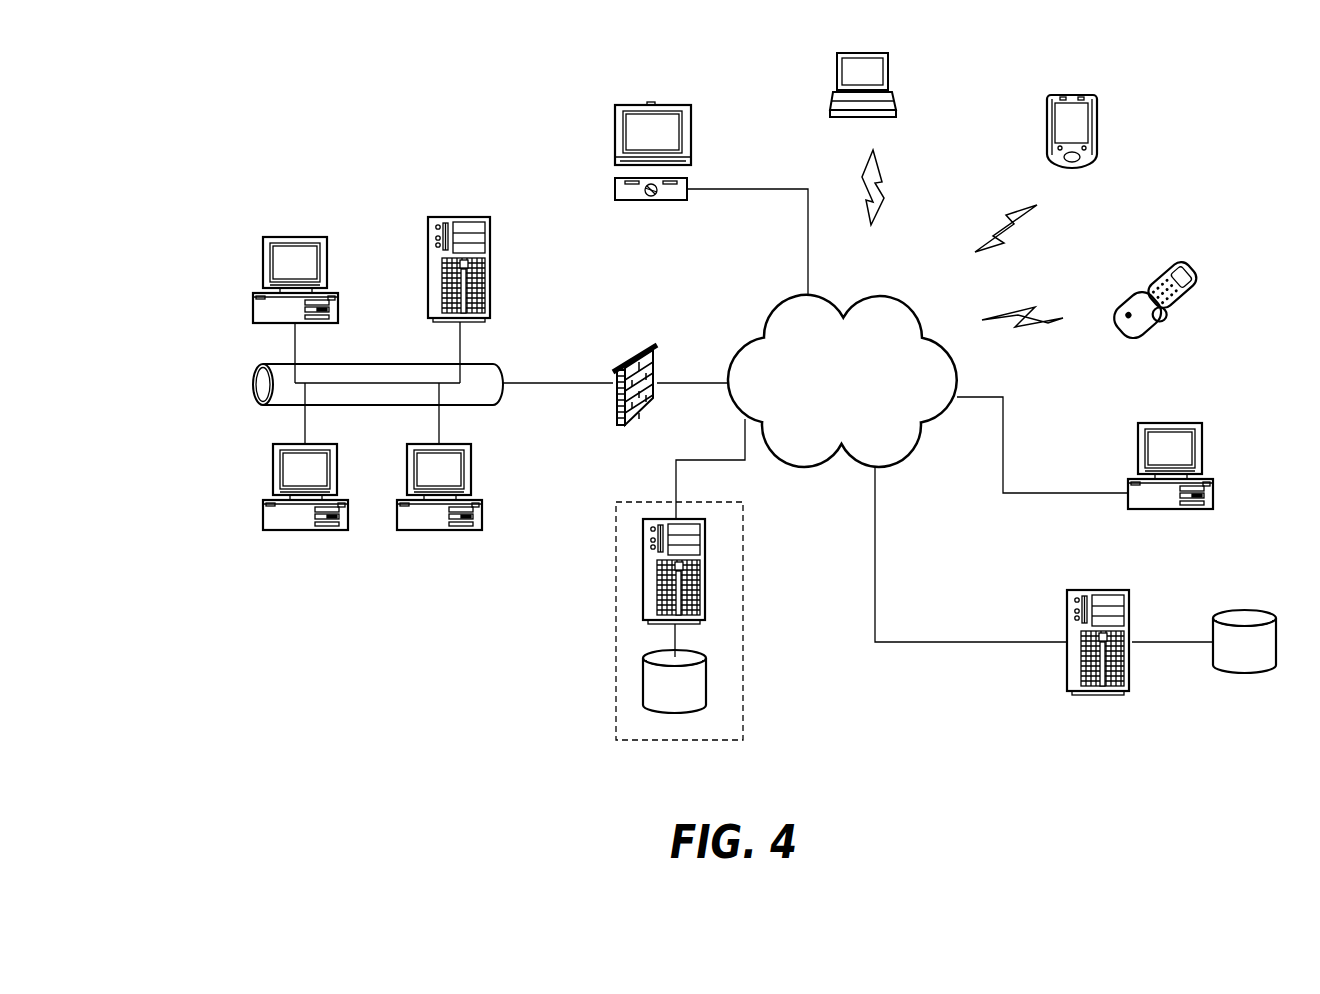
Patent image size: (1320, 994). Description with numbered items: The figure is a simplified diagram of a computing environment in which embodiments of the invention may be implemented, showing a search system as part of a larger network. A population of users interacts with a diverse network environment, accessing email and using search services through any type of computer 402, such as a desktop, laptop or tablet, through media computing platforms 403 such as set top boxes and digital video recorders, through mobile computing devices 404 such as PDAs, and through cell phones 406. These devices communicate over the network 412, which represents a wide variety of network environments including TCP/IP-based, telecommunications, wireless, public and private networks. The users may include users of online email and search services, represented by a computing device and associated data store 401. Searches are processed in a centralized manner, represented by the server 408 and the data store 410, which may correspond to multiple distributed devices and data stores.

The computing device and associated data store 401 is at (743, 652).
The computer 402 is at (263, 267).
The media computing platform 403 is at (613, 188).
The mobile computing device 404 is at (1047, 103).
The cell phone 406 is at (1157, 273).
The server 408 is at (1078, 588).
The data store 410 is at (1242, 610).
The network 412 is at (773, 312).